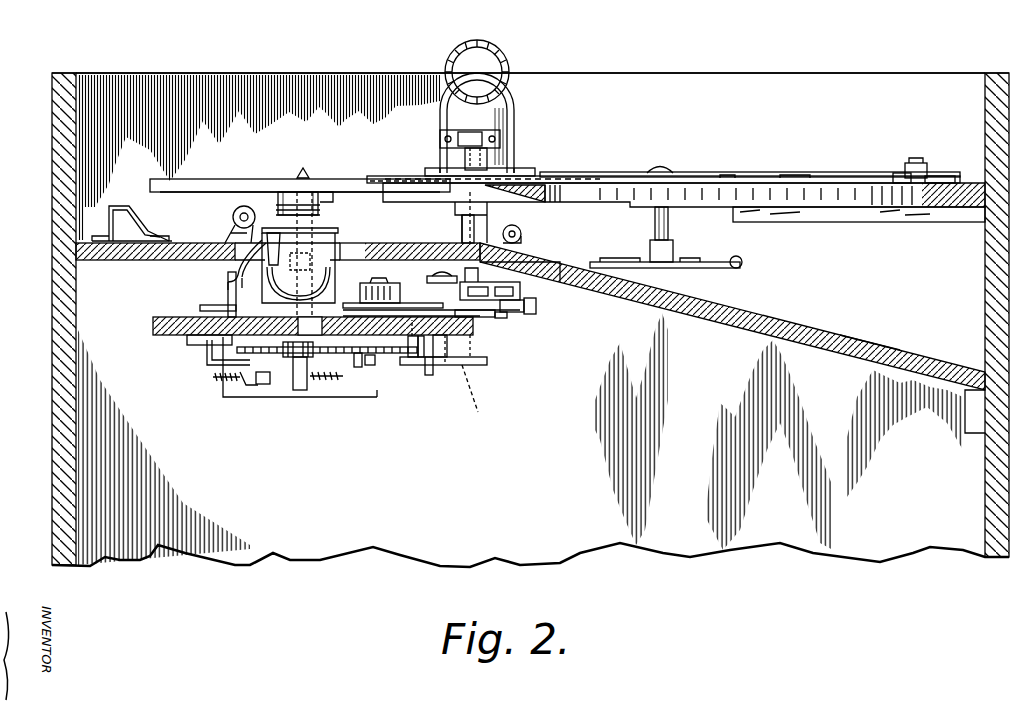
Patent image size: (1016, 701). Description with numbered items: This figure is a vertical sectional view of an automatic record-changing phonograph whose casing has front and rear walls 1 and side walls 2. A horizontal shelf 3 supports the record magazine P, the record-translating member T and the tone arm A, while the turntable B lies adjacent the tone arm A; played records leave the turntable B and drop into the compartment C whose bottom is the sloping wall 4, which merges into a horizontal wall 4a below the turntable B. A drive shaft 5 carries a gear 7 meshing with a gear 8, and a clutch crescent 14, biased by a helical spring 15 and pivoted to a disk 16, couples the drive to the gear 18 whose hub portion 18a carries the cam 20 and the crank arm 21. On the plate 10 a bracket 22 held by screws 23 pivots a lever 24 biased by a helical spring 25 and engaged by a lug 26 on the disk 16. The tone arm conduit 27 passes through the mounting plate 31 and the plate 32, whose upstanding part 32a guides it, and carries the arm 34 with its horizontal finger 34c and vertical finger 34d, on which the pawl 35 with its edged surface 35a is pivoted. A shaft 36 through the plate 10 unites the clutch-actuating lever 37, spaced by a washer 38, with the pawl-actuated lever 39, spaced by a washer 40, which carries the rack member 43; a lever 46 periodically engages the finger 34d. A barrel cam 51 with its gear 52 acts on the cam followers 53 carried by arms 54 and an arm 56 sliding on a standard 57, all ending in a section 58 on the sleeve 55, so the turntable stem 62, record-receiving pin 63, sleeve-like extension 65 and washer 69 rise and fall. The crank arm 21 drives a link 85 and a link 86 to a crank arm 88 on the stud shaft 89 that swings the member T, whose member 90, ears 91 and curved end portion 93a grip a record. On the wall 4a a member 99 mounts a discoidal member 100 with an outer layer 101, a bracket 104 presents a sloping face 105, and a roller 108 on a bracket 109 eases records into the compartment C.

The front and rear walls 1 is at (788, 76).
The side walls 2 is at (62, 104).
The shelf 3 is at (935, 218).
The sloping wall 4 is at (702, 322).
The horizontal wall 4a is at (140, 262).
The drive shaft 5 is at (300, 392).
The gear 7 is at (290, 360).
The gear 8 is at (404, 355).
The plate 10 is at (153, 328).
The clutch crescent 14 is at (372, 367).
The helical spring 15 is at (330, 382).
The disk 16 is at (359, 368).
The gear 18 is at (413, 360).
The hub portion 18a is at (362, 292).
The cam 20 is at (420, 360).
The crank arm 21 is at (428, 279).
The bracket 22 is at (206, 356).
The screws 23 is at (190, 342).
The lever 24 is at (243, 380).
The helical spring 25 is at (212, 377).
The lug 26 is at (262, 384).
The conduit 27 is at (446, 112).
The mounting plate 31 is at (552, 178).
The plate 32 is at (512, 166).
The upstanding part 32a is at (516, 112).
The arm 34 is at (466, 212).
The horizontal finger 34c is at (465, 243).
The vertical finger 34d is at (572, 262).
The pawl 35 is at (522, 291).
The edged surface 35a is at (525, 306).
The shaft 36 is at (443, 360).
The clutch-actuating lever 37 is at (430, 377).
The washer 38 is at (470, 367).
The pawl-actuated lever 39 is at (470, 320).
The washer 40 is at (488, 306).
The rack member 43 is at (537, 312).
The lever 46 is at (503, 318).
The barrel cam 51 is at (229, 293).
The gear 52 is at (200, 308).
The cam followers 53 is at (357, 252).
The arm 54 is at (340, 236).
The sleeve 55 is at (333, 252).
The arm 56 is at (262, 260).
The standard 57 is at (228, 285).
The section 58 is at (286, 193).
The turntable stem 62 is at (322, 200).
The record-receiving pin 63 is at (305, 168).
The sleeve-like extension 65 is at (340, 230).
The washer 69 is at (340, 190).
The link 85 is at (650, 252).
The link 86 is at (740, 268).
The crank arm 88 is at (712, 262).
The stud shaft 89 is at (669, 218).
The member 90 is at (945, 176).
The ears 91 is at (922, 162).
The curved end portion 93a is at (902, 172).
The member 99 is at (231, 235).
The discoidal member 100 is at (236, 180).
The outer layer 101 is at (233, 213).
The bracket 104 is at (108, 214).
The sloping face 105 is at (100, 237).
The roller 108 is at (522, 229).
The bracket 109 is at (524, 240).
The tone arm A is at (514, 57).
The turntable B is at (163, 178).
The compartment C is at (860, 347).
The record magazine P is at (870, 210).
The record-translating member T is at (778, 173).